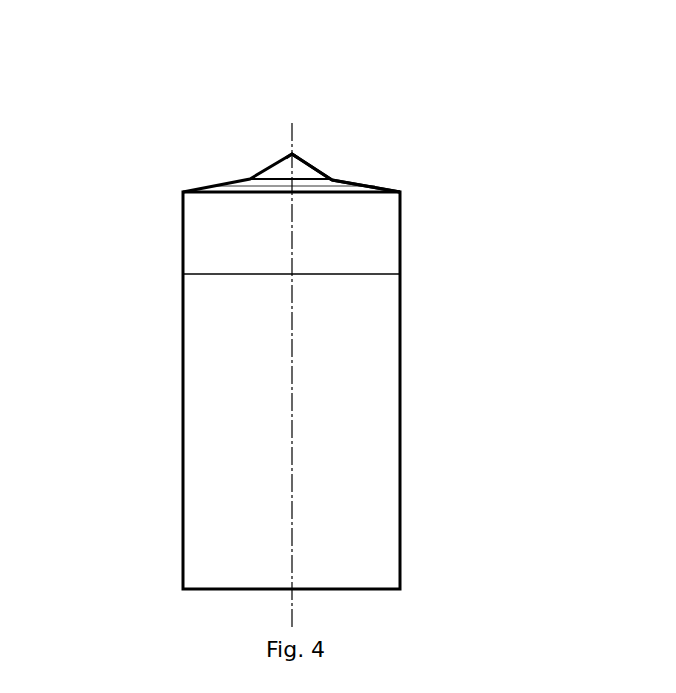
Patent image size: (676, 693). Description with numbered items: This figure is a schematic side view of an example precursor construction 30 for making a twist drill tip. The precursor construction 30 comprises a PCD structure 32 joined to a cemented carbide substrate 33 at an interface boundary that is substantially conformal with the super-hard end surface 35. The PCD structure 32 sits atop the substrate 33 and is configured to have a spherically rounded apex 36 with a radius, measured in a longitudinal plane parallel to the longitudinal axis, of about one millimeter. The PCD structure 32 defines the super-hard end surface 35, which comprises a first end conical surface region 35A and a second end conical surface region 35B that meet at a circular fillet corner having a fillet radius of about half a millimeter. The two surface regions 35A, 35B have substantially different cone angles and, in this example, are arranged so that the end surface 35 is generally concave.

The precursor construction 30 is at (126, 136).
The PCD structure 32 is at (389, 225).
The cemented carbide substrate 33 is at (389, 377).
The super-hard end surface 35 is at (263, 112).
The first end conical surface region 35A is at (317, 167).
The second end conical surface region 35B is at (372, 185).
The spherically rounded apex 36 is at (292, 154).